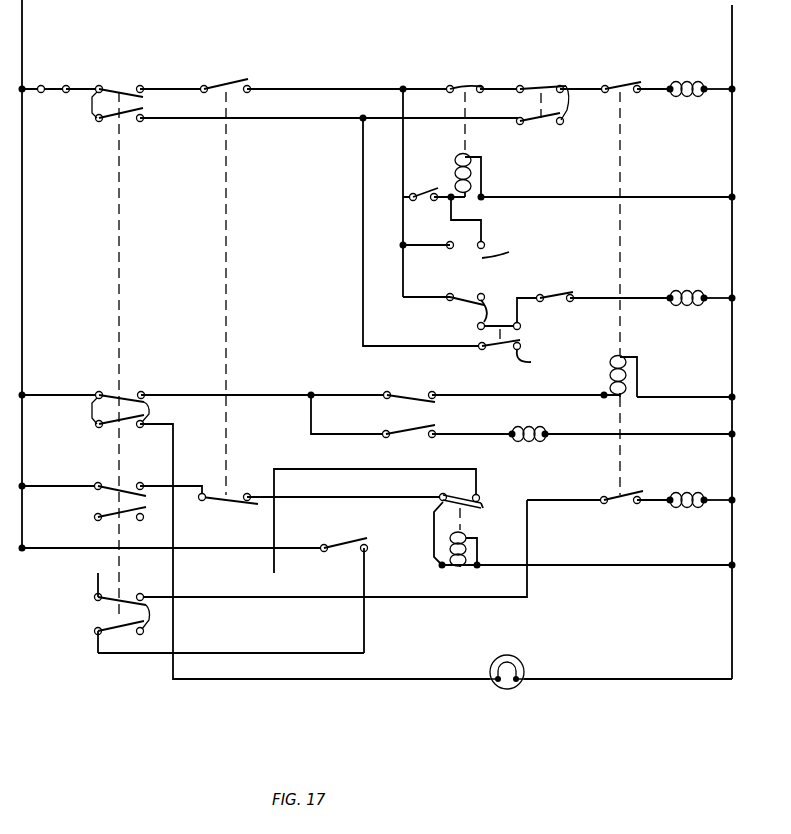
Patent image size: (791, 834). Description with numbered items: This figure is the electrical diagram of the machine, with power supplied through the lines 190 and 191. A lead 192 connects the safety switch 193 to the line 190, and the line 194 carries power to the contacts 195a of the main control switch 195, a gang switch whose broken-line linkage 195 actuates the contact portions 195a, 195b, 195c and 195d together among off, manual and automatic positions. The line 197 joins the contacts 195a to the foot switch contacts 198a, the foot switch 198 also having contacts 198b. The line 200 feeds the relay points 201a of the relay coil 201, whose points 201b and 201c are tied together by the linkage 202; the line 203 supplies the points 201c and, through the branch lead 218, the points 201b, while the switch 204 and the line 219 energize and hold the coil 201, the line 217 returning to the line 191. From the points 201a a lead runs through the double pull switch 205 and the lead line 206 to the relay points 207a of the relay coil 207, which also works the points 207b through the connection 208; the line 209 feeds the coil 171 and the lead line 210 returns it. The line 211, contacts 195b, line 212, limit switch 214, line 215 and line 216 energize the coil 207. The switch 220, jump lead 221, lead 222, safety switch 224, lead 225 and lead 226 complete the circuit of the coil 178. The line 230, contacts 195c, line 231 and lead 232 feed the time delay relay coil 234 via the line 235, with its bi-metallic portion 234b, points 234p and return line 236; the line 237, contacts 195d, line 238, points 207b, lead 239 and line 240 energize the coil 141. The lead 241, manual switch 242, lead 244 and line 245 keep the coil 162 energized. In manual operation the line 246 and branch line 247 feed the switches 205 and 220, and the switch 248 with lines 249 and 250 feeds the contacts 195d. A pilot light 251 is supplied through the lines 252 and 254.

The power line 190 is at (23, 22).
The return power lead 191 is at (732, 20).
The lead 192 is at (32, 84).
The safety switch 193 is at (50, 84).
The line 194 is at (79, 84).
The main control switch 195 is at (121, 200).
The switch contacts 195a is at (127, 86).
The switch contacts 195b is at (130, 392).
The switch contacts 195c is at (128, 484).
The switch contacts 195d is at (128, 595).
The line 197 is at (174, 86).
The foot switch 198 is at (228, 219).
The foot switch contacts 198a is at (232, 77).
The foot switch contacts 198b is at (237, 492).
The line 200 is at (305, 86).
The relay coil 201 is at (484, 171).
The relay points 201a is at (462, 86).
The relay points 201b is at (505, 254).
The relay points 201c is at (472, 297).
The mechanical linkage 202 is at (469, 134).
The line 203 is at (405, 148).
The switch 204 is at (424, 199).
The double pull switch 205 is at (537, 86).
The lead line 206 is at (581, 86).
The relay coil 207 is at (612, 373).
The relay points 207a is at (624, 82).
The relay points 207b is at (622, 505).
The mechanical connection 208 is at (622, 160).
The line 209 is at (652, 92).
The lead line 210 is at (718, 92).
The valve coil 171 is at (684, 82).
The line 211 is at (44, 394).
The line 212 is at (263, 394).
The limit switch 214 is at (413, 391).
The line 215 is at (475, 395).
The line 216 is at (674, 396).
The line 217 is at (565, 197).
The branch lead 218 is at (418, 245).
The line 219 is at (486, 220).
The switch 220 is at (533, 361).
The jump lead 221 is at (499, 300).
The lead 222 is at (522, 310).
The safety switch 224 is at (562, 297).
The lead 225 is at (599, 302).
The lead 226 is at (718, 302).
The coil 178 is at (690, 291).
The line 230 is at (57, 485).
The line 231 is at (188, 484).
The lead 232 is at (356, 497).
The time delay relay coil 234 is at (480, 552).
The bi-metallic portion 234b is at (462, 495).
The relay points 234p is at (482, 503).
The line 235 is at (433, 532).
The line 236 is at (622, 568).
The line 237 is at (345, 469).
The line 238 is at (529, 537).
The lead 239 is at (653, 498).
The line 240 is at (718, 503).
The coil 141 is at (686, 493).
The lead 241 is at (338, 434).
The manually operated switch 242 is at (424, 427).
The lead 244 is at (470, 434).
The coil 162 is at (522, 426).
The line 245 is at (575, 434).
The line 246 is at (262, 120).
The branch line 247 is at (363, 245).
The switch 248 is at (350, 553).
The line 249 is at (225, 548).
The line 250 is at (263, 653).
The pilot light 251 is at (505, 692).
The line 252 is at (262, 682).
The line 254 is at (587, 682).